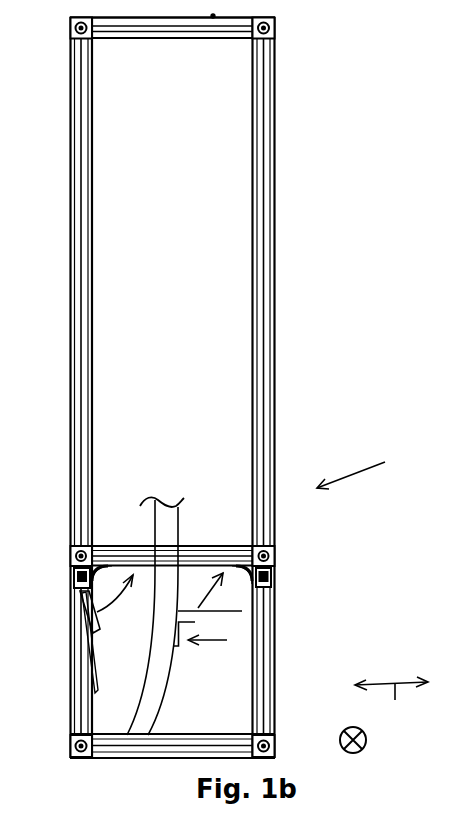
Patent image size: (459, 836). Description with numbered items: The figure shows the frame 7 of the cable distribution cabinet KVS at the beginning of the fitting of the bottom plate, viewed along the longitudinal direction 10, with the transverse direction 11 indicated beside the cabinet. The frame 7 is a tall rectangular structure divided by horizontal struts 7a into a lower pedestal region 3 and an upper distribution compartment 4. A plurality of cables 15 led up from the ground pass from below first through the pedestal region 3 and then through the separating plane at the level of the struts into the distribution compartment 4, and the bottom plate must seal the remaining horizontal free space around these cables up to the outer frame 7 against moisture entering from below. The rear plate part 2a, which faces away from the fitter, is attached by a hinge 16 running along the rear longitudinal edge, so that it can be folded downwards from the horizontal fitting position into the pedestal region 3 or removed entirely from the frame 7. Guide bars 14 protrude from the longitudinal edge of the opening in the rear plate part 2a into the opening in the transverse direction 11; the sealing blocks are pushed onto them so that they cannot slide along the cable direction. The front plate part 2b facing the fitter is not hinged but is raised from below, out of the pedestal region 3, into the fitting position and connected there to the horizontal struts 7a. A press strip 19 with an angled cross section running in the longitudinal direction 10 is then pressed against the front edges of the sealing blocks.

The frame 7 is at (260, 400).
The distribution compartment 4 is at (172, 292).
The horizontal struts 7a is at (222, 558).
The hinge 16 is at (72, 563).
The rear plate part 2a is at (74, 605).
The guide bars 14 is at (93, 676).
The cables 15 is at (119, 607).
The pedestal region 3 is at (155, 616).
The front plate part 2b is at (227, 617).
The press strip 19 is at (175, 657).
The cable distribution cabinet KVS is at (371, 470).
The transverse direction 11 is at (391, 698).
The longitudinal direction 10 is at (367, 743).